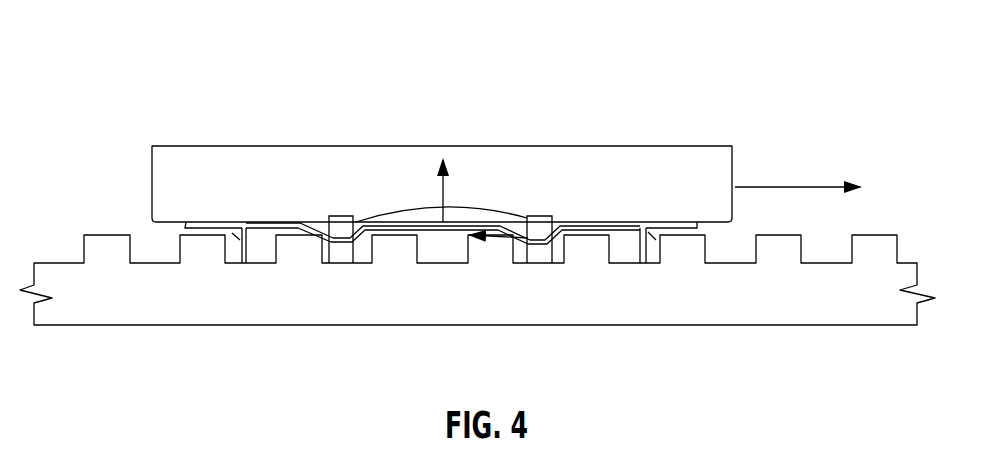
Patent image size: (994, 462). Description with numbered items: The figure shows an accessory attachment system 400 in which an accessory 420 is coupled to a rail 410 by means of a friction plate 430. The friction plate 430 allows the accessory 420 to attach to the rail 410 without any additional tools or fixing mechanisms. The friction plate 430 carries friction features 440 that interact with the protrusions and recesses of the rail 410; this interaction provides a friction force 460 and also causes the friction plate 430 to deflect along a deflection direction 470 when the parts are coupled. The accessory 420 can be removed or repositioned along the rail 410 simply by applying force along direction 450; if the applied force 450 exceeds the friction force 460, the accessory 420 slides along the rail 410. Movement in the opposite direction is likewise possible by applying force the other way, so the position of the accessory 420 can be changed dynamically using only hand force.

The accessory attachment system 400 is at (132, 42).
The rail 410 is at (785, 305).
The accessory 420 is at (524, 168).
The friction plate 430 is at (589, 220).
The friction features 440 is at (340, 246).
The direction of applied force 450 is at (793, 185).
The friction force 460 is at (486, 240).
The deflection direction 470 is at (435, 183).